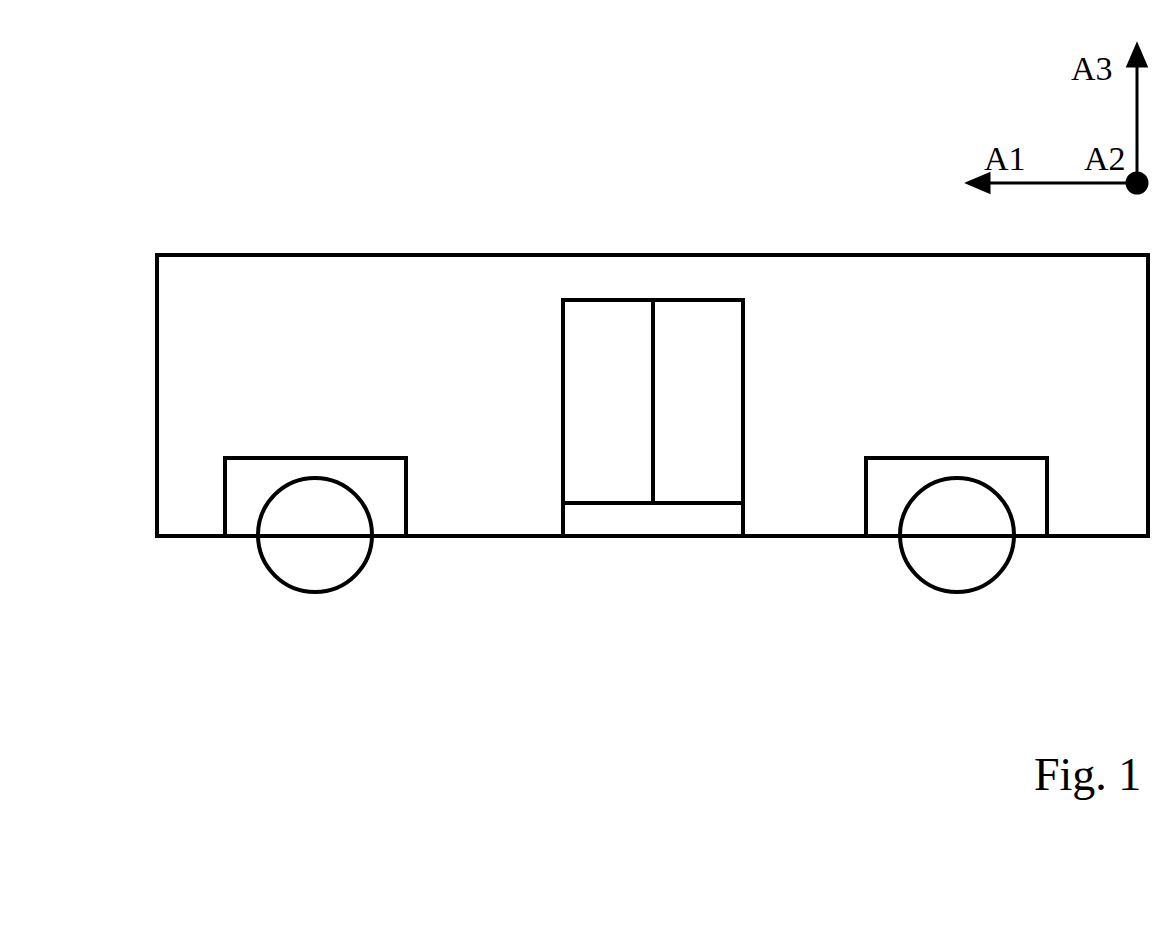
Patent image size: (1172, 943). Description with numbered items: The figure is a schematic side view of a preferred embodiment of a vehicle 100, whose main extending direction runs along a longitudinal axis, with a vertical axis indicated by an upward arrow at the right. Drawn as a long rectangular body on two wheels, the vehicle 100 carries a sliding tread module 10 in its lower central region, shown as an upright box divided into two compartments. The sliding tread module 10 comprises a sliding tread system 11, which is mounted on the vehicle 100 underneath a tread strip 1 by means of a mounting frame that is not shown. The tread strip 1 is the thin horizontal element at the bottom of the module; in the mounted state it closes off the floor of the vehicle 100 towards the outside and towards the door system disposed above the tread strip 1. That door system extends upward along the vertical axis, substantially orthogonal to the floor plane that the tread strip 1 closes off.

The vehicle 100 is at (752, 222).
The sliding tread module 10 is at (595, 558).
The sliding tread system 11 is at (678, 518).
The tread strip 1 is at (695, 506).